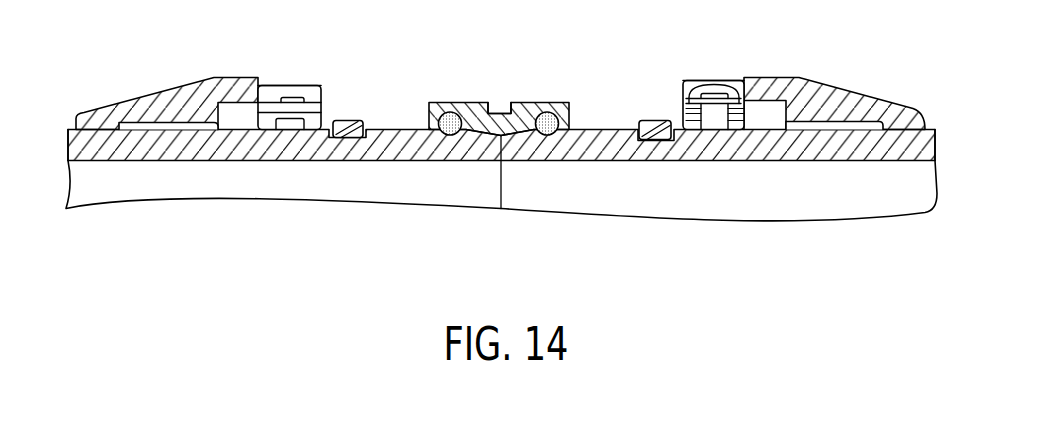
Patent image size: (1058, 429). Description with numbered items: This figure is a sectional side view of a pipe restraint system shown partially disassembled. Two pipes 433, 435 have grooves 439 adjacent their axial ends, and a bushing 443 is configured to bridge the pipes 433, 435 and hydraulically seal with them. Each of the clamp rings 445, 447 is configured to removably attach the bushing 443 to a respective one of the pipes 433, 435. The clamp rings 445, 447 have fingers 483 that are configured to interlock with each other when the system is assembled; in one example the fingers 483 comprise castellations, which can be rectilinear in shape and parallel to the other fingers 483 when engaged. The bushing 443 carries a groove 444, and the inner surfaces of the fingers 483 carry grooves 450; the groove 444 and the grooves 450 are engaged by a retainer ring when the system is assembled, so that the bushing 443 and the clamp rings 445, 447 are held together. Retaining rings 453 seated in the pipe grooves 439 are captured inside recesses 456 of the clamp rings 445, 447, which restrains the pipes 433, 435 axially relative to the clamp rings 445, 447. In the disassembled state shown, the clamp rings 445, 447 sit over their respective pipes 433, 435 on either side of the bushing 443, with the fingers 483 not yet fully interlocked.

The pipe 433 is at (70, 130).
The pipe 435 is at (937, 164).
The pipe groove 439 is at (338, 121).
The bushing 443 is at (537, 102).
The groove 444 is at (497, 112).
The clamp ring 445 is at (173, 90).
The clamp ring 447 is at (803, 87).
The groove 450 is at (287, 104).
The retaining ring 453 is at (350, 135).
The recess 456 is at (160, 127).
The finger 483 is at (308, 85).